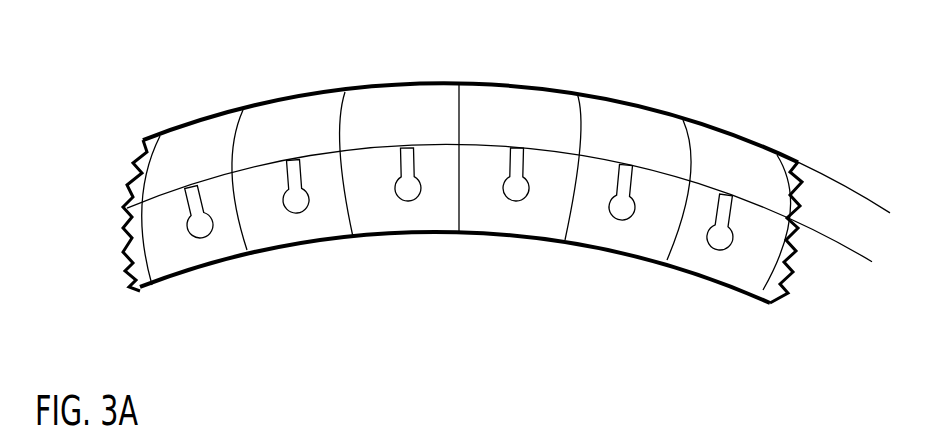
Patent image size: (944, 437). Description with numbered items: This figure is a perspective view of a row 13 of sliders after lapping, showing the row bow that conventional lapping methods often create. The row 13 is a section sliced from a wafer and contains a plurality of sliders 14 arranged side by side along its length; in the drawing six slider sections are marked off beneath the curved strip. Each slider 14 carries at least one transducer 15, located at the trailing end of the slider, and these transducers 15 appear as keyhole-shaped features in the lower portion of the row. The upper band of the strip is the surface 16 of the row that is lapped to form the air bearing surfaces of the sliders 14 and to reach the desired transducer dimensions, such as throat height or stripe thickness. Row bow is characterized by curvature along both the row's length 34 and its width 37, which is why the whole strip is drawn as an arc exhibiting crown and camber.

The row 13 is at (460, 190).
The sliders 14 is at (247, 275).
The transducer 15 is at (190, 230).
The surface 16 is at (533, 117).
The length 34 is at (787, 45).
The width 37 is at (828, 177).